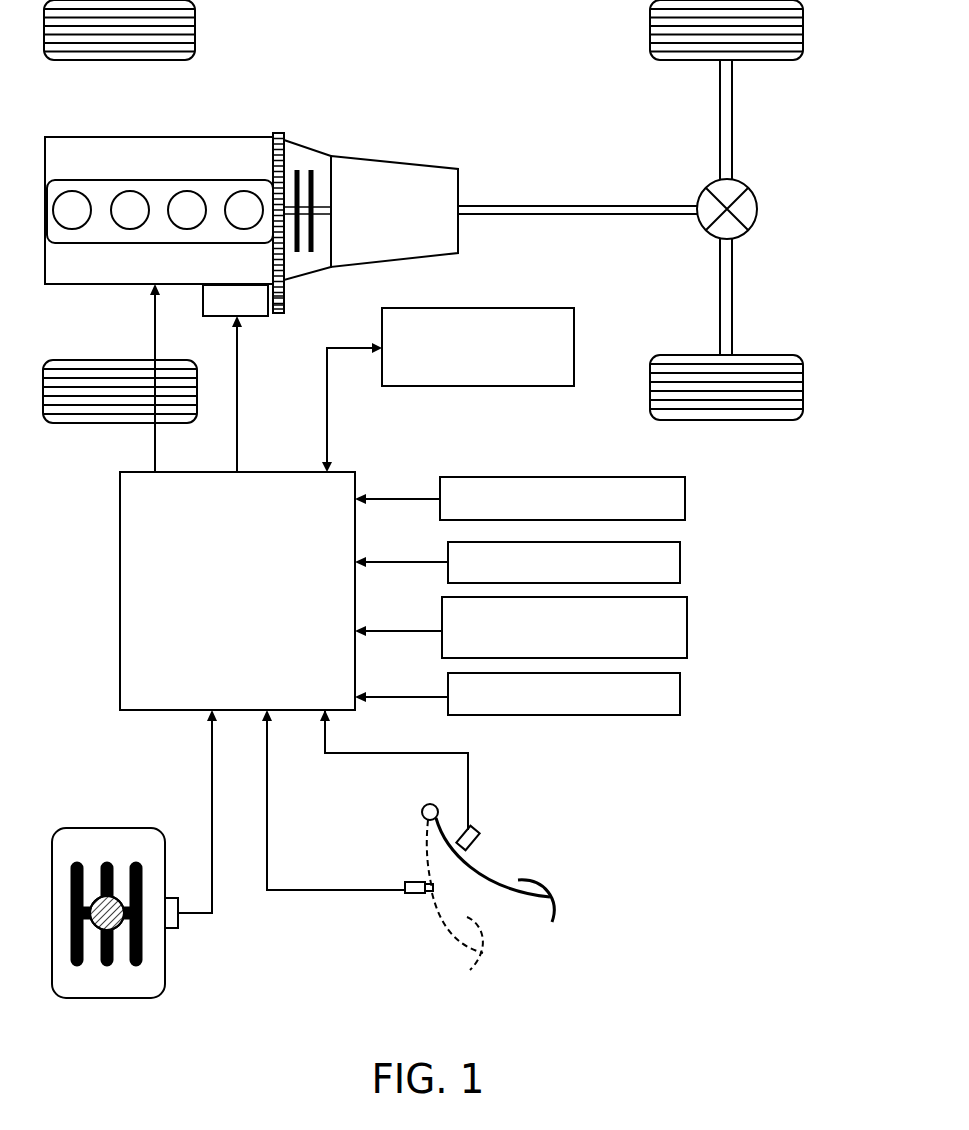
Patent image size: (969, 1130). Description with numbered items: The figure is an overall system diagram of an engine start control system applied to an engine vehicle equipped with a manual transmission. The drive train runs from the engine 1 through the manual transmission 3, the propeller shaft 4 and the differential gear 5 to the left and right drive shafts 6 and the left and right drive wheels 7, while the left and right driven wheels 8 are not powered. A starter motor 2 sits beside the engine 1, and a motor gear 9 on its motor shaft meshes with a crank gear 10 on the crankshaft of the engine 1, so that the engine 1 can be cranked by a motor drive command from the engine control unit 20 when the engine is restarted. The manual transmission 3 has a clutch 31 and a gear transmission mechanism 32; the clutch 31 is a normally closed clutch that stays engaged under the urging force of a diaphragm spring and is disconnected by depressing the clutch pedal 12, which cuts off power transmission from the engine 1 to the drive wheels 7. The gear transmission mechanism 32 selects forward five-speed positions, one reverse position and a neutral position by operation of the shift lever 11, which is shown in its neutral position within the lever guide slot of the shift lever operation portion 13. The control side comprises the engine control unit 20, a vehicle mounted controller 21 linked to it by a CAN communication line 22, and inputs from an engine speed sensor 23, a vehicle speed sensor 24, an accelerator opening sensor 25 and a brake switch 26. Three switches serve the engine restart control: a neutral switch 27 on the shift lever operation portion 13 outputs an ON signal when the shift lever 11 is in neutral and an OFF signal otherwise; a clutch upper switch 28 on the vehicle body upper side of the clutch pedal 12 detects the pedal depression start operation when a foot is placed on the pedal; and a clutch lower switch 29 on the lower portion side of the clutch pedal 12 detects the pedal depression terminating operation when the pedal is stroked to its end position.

The engine 1 is at (188, 134).
The starter motor 2 is at (253, 320).
The manual transmission 3 is at (371, 166).
The propeller shaft 4 is at (537, 205).
The differential gear 5 is at (708, 183).
The drive shafts 6 is at (720, 118).
The drive wheels 7 is at (650, 22).
The driven wheels 8 is at (197, 20).
The motor gear 9 is at (286, 298).
The crank gear 10 is at (278, 133).
The shift lever 11 is at (97, 903).
The clutch pedal 12 is at (548, 898).
The shift lever operation portion 13 is at (108, 882).
The engine control unit 20 is at (272, 470).
The vehicle mounted controller 21 is at (537, 308).
The CAN communication line 22 is at (330, 430).
The engine speed sensor 23 is at (687, 500).
The vehicle speed sensor 24 is at (682, 564).
The accelerator opening sensor 25 is at (689, 626).
The brake switch 26 is at (682, 692).
The neutral switch 27 is at (180, 926).
The clutch upper switch 28 is at (478, 834).
The clutch lower switch 29 is at (408, 896).
The clutch 31 is at (305, 165).
The gear transmission mechanism 32 is at (393, 195).